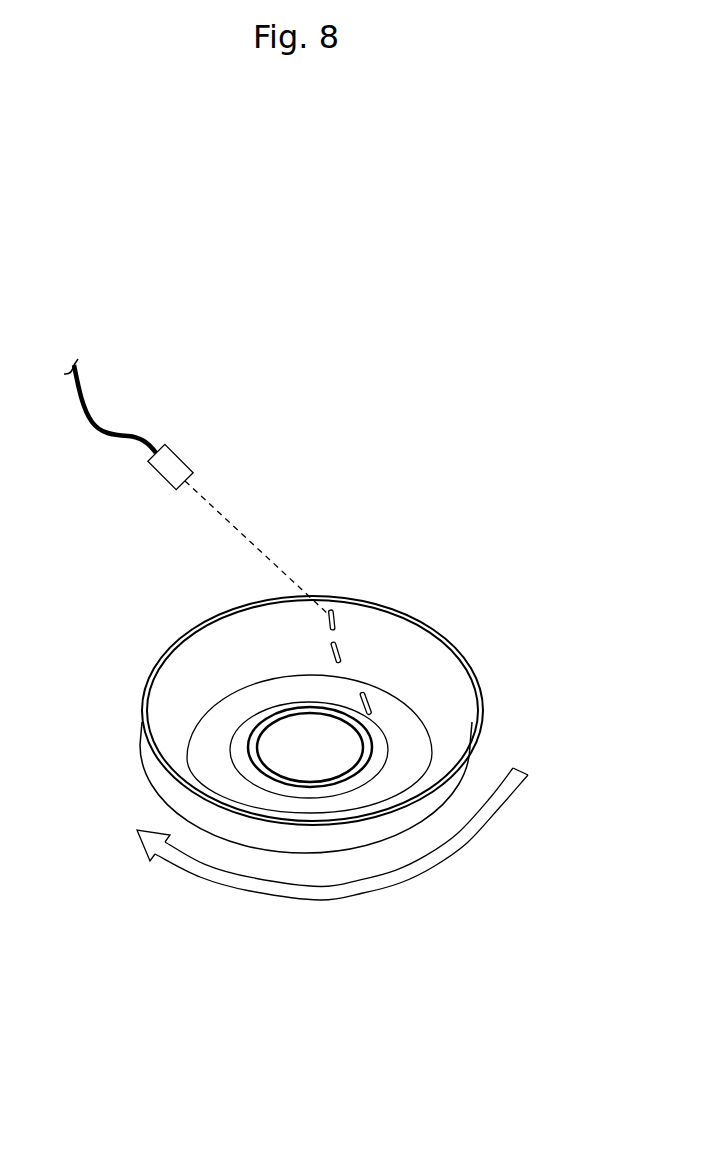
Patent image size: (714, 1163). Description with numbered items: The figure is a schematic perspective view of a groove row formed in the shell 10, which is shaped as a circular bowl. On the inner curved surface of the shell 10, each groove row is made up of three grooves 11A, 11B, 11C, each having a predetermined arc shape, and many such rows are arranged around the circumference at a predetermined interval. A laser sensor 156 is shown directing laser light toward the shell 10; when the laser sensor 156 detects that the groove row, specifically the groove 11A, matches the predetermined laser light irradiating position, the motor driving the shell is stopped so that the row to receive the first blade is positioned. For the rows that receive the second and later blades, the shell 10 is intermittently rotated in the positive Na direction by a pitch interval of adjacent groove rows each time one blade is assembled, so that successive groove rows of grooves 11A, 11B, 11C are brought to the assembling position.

The shell 10 is at (148, 673).
The laser sensor 156 is at (186, 459).
The groove 11A is at (336, 618).
The groove 11B is at (340, 649).
The groove 11C is at (370, 704).
The Na direction Na is at (317, 898).